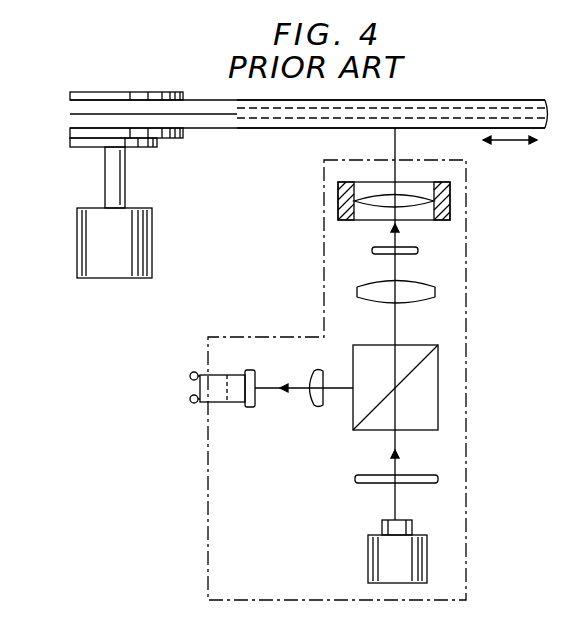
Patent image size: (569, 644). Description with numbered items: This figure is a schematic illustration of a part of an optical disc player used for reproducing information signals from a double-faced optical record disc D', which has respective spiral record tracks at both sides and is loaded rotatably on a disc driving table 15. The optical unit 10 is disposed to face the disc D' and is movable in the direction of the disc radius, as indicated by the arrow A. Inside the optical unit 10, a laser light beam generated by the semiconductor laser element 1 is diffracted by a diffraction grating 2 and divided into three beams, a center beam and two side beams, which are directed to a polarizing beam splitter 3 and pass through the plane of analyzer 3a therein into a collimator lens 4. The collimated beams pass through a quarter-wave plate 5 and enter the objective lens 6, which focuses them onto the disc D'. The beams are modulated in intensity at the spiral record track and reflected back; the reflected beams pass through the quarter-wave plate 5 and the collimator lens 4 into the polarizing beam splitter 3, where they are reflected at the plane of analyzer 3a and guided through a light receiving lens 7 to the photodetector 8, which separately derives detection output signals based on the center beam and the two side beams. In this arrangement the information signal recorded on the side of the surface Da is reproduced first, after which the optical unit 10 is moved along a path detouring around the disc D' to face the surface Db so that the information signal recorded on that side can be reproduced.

The semiconductor laser element 1 is at (375, 572).
The diffraction grating 2 is at (417, 475).
The polarizing beam splitter 3 is at (368, 345).
The plane of analyzer 3a is at (414, 360).
The collimator lens 4 is at (360, 283).
The quarter-wave plate 5 is at (410, 254).
The objective lens 6 is at (368, 205).
The light receiving lens 7 is at (313, 405).
The photodetector 8 is at (252, 408).
The optical unit 10 is at (208, 578).
The disc driving table 15 is at (160, 143).
The arrow indicating direction of movement A is at (510, 153).
The surface of the double-faced optical record disc Da is at (281, 129).
The surface of the double-faced optical record disc Db is at (242, 100).
The double-faced optical record disc D' is at (309, 159).